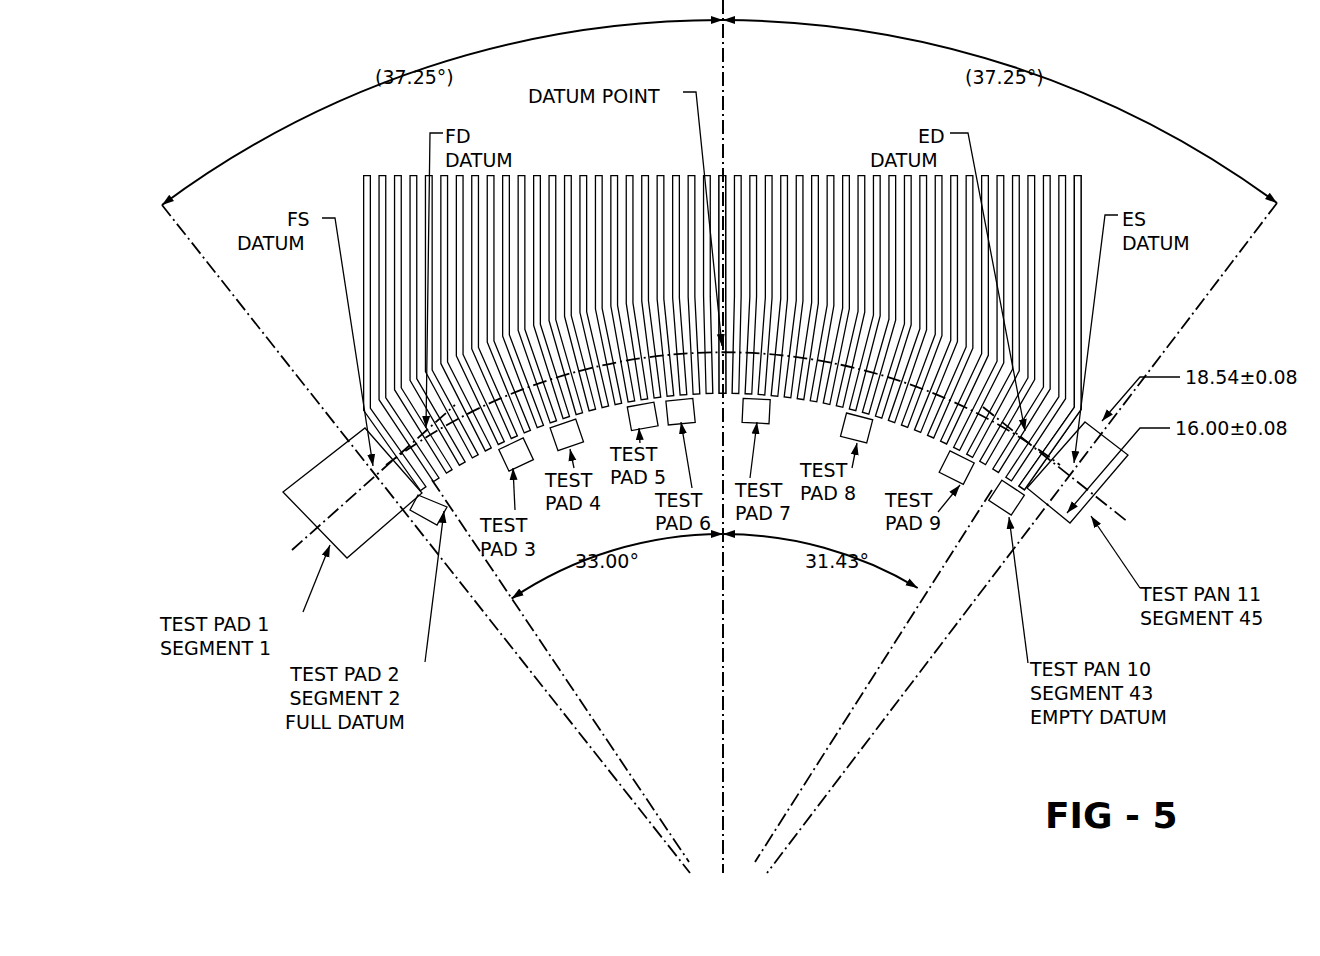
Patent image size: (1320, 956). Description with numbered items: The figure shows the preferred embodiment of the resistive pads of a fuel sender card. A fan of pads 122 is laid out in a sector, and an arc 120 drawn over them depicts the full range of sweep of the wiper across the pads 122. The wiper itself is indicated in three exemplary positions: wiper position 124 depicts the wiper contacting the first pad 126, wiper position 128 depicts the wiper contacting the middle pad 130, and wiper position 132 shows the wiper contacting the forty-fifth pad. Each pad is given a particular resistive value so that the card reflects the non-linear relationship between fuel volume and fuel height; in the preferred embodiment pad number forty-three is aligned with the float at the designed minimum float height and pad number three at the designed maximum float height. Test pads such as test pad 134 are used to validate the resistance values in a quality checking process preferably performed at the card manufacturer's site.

The arc 120 is at (250, 147).
The pads 122 is at (254, 351).
The wiper position 124 is at (524, 663).
The first pad 126 is at (305, 496).
The wiper position 128 is at (724, 93).
The middle pad 130 is at (724, 177).
The wiper position 132 is at (1087, 175).
The test pad 134 is at (515, 463).